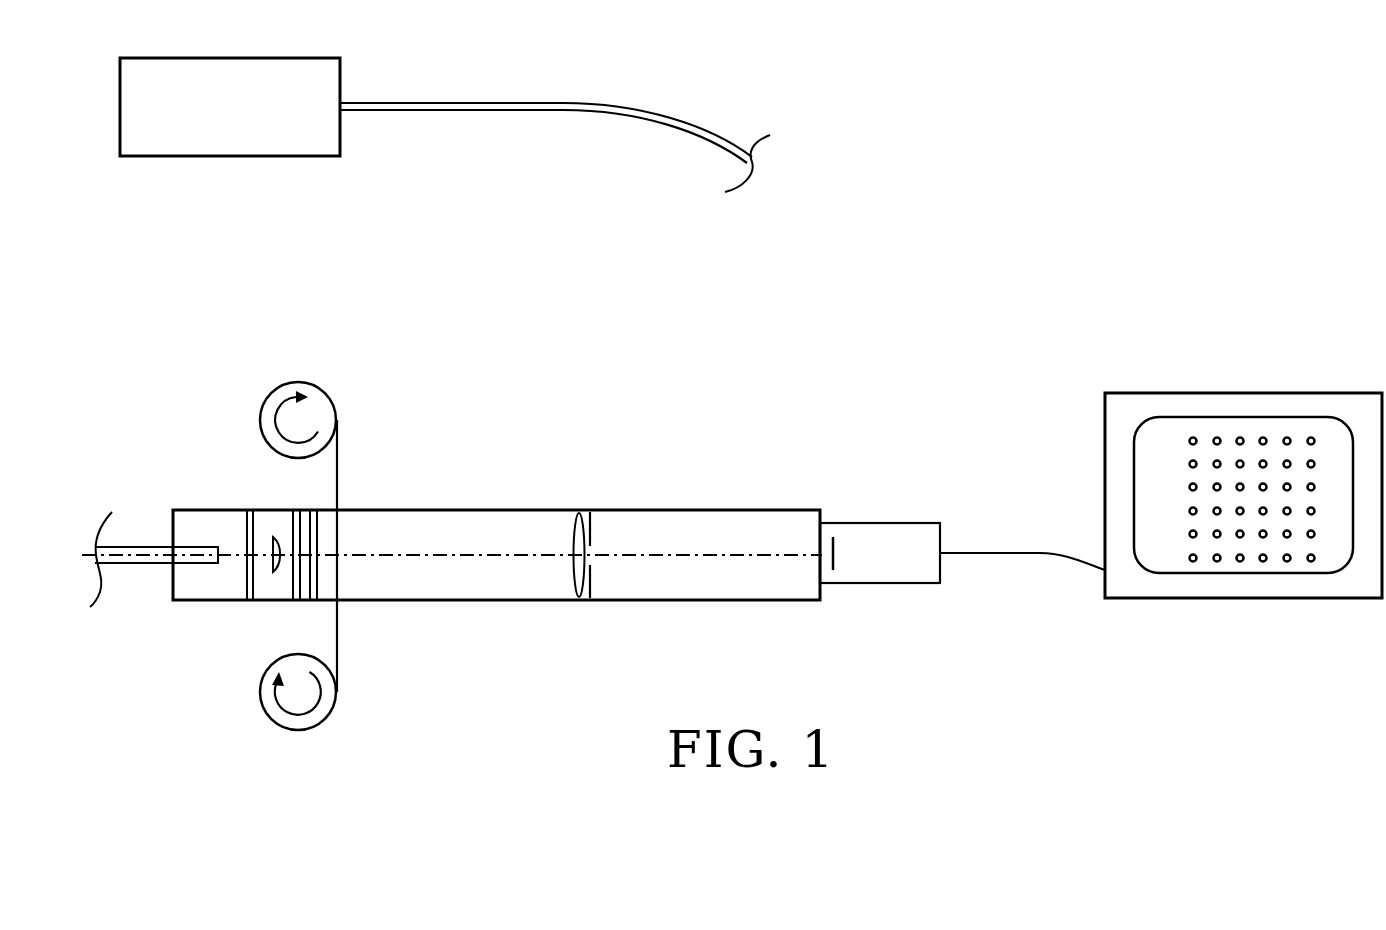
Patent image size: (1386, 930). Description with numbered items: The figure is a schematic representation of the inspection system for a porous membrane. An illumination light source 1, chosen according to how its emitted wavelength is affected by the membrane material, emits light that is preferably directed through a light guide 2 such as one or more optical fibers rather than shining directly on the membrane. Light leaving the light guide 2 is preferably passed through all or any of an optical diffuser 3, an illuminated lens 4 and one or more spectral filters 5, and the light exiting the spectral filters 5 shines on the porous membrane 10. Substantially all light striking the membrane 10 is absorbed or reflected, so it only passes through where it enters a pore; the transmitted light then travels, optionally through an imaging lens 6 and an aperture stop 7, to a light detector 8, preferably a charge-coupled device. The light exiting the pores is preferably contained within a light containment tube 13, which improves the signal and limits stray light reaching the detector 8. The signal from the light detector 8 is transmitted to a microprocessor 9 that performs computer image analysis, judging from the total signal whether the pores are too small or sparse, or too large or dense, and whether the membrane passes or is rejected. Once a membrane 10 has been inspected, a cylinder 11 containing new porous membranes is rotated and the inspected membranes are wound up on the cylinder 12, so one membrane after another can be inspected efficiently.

The light source 1 is at (240, 58).
The light guide 2 is at (510, 103).
The optical diffuser 3 is at (246, 513).
The illuminated lens 4 is at (274, 537).
The spectral filters 5 is at (292, 593).
The imaging lens 6 is at (583, 512).
The aperture stop 7 is at (592, 588).
The light detector 8 is at (835, 546).
The microprocessor 9 is at (1222, 393).
The porous membrane 10 is at (337, 460).
The cylinder 11 is at (316, 388).
The cylinder 12 is at (335, 704).
The light containment tube 13 is at (778, 600).